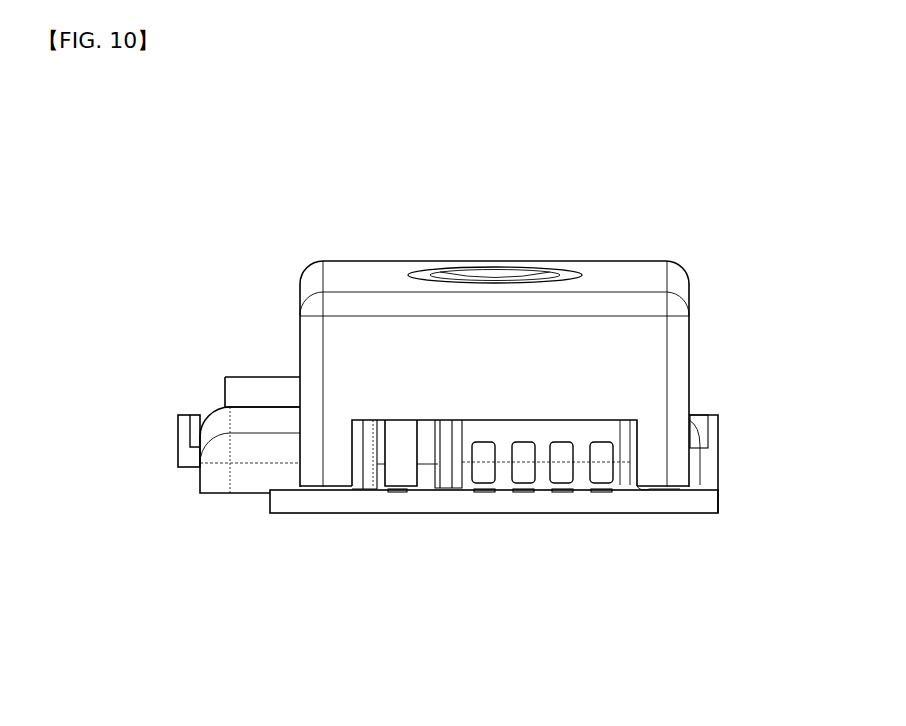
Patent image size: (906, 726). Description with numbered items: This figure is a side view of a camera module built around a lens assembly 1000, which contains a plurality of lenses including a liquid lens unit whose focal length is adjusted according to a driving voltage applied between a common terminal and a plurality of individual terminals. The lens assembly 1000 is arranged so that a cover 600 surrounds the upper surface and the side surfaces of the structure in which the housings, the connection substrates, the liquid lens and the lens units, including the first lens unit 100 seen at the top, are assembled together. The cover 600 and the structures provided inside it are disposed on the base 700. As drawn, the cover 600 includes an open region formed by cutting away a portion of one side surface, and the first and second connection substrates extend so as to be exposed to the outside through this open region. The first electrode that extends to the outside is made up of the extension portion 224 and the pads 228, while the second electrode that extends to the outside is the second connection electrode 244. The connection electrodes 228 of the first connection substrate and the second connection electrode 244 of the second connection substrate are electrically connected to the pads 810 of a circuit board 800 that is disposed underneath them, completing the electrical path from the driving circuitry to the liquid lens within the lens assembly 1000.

The lens assembly 1000 is at (570, 247).
The first lens unit 100 is at (485, 275).
The cover 600 is at (640, 270).
The base 700 is at (695, 478).
The circuit board 800 is at (569, 500).
The pads 810 is at (400, 493).
The second connection electrode 244 is at (415, 480).
The pads 228 is at (598, 478).
The extension portion 224 is at (620, 478).